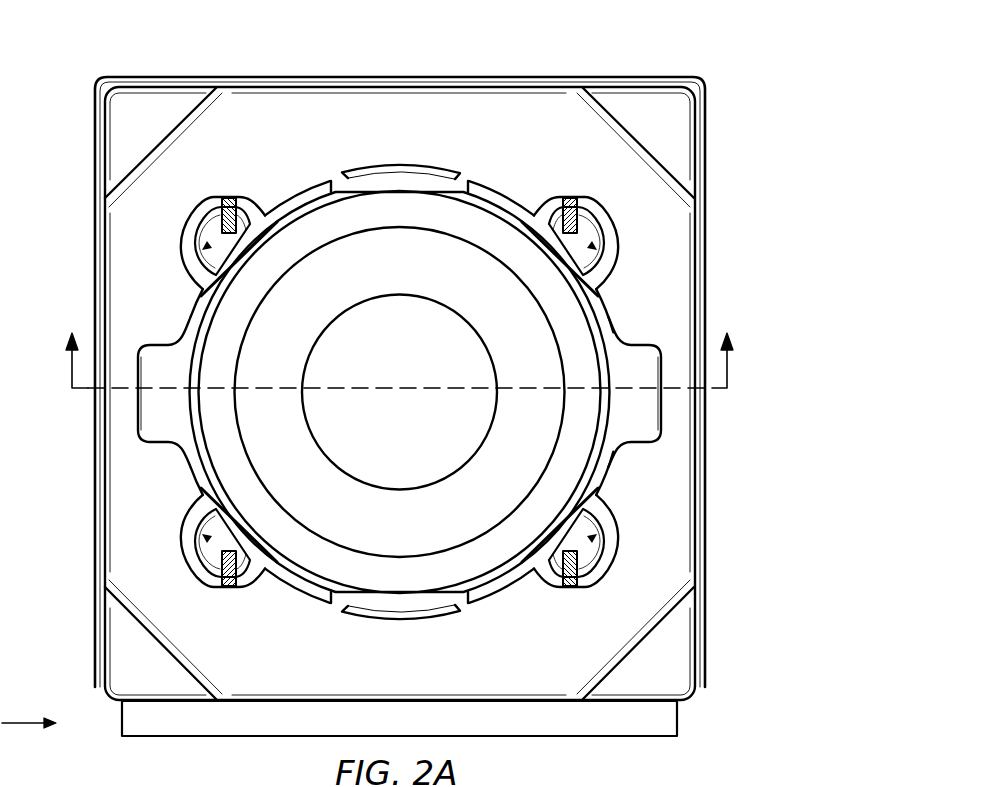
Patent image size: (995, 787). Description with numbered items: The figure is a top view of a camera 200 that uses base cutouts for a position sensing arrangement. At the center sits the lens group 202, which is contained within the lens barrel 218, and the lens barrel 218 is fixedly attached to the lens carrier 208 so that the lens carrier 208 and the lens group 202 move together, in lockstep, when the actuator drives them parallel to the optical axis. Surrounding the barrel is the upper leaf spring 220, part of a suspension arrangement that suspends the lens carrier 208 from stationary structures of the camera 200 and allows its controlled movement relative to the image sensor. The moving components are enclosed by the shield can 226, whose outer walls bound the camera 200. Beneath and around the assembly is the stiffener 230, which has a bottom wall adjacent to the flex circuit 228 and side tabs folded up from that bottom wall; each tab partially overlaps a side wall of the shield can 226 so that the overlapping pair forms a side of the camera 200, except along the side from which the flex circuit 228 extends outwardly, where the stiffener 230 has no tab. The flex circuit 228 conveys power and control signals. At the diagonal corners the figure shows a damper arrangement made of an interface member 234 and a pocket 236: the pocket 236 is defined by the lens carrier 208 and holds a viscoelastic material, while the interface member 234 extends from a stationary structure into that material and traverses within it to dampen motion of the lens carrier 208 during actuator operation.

The camera 200 is at (601, 56).
The lens group 202 is at (416, 434).
The lens carrier 208 is at (167, 423).
The lens barrel 218 is at (416, 529).
The upper leaf spring 220 is at (499, 198).
The shield can 226 is at (272, 667).
The flex circuit 228 is at (670, 717).
The stiffener 230 is at (706, 268).
The interface member 234 is at (578, 221).
The pocket 236 is at (597, 244).